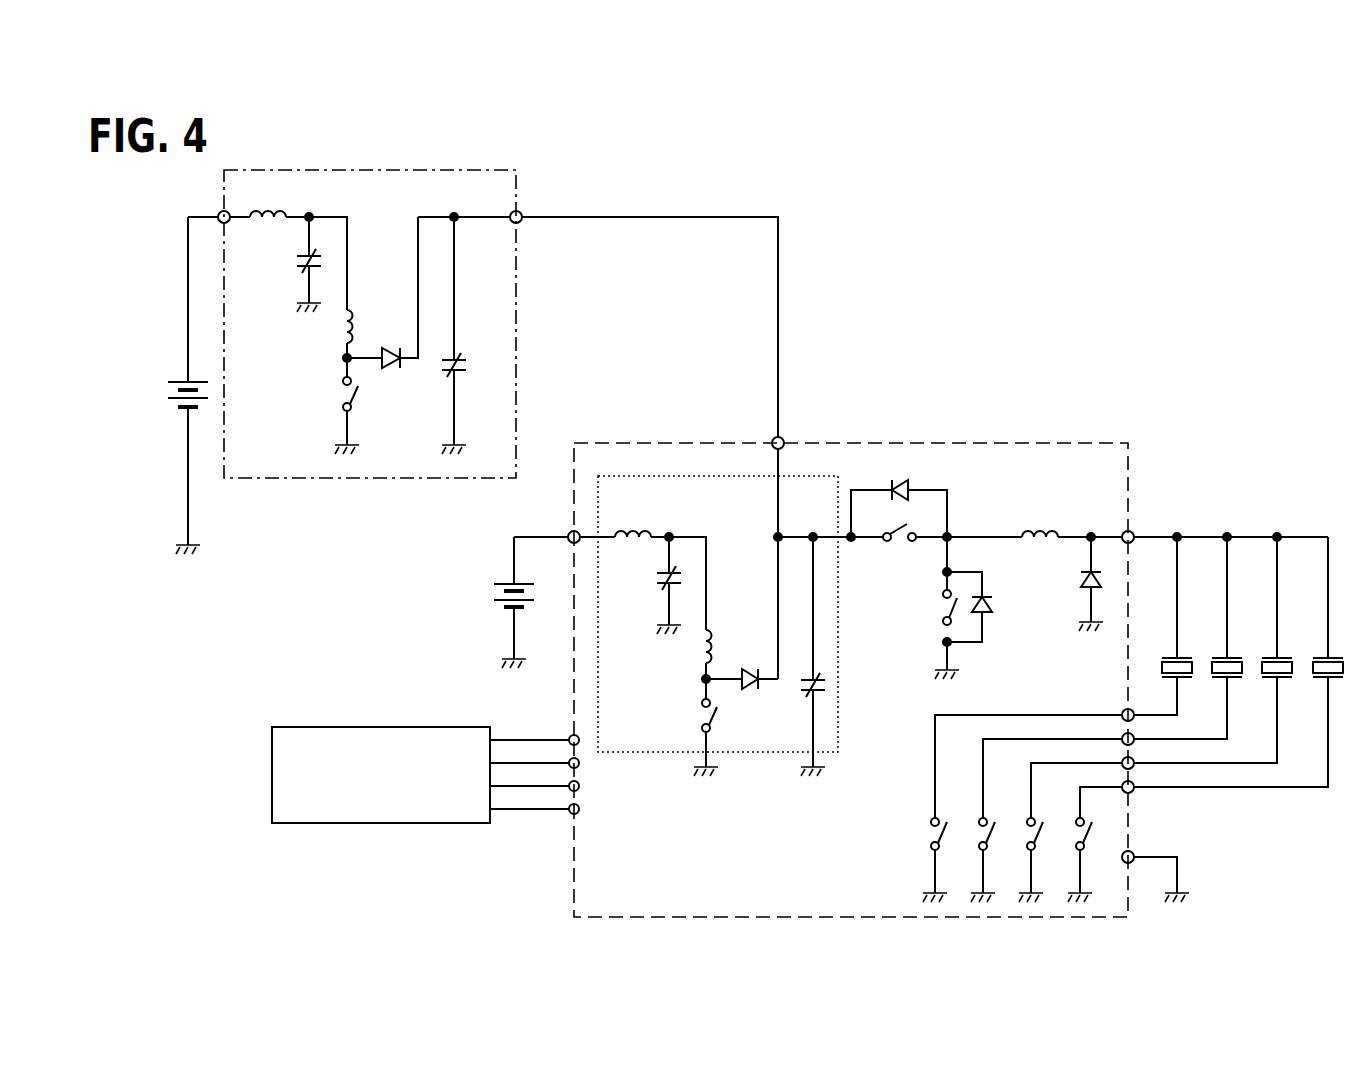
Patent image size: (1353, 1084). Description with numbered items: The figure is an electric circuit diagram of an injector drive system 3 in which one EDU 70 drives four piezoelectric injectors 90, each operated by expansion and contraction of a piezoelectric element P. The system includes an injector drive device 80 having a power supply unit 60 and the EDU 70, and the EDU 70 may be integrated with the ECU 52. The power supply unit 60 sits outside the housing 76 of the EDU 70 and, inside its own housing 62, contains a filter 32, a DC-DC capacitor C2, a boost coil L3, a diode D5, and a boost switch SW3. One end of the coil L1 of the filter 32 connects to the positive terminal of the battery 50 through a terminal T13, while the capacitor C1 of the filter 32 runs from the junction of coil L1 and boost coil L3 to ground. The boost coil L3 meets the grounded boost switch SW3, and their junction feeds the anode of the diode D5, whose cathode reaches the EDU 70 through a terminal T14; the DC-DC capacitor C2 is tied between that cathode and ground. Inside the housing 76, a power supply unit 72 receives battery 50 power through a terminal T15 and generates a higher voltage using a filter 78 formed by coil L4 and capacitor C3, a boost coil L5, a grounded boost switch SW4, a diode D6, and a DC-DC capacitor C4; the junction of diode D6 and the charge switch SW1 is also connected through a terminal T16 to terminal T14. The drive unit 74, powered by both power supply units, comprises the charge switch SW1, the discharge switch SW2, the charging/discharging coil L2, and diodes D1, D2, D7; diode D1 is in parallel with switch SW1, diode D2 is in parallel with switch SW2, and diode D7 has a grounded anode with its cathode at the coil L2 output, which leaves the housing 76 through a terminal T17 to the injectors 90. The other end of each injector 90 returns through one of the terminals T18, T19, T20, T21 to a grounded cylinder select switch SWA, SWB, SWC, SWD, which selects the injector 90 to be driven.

The injector drive system 3 is at (1218, 236).
The filter 32 is at (313, 205).
The battery 50 is at (184, 378).
The ECU 52 is at (272, 775).
The power supply unit 60 is at (541, 301).
The housing 62 is at (269, 479).
The EDU 70 is at (1051, 405).
The power supply unit 72 is at (685, 477).
The drive unit 74 is at (974, 502).
The housing 76 is at (912, 440).
The filter 78 is at (672, 529).
The injector drive device 80 is at (859, 214).
The injector 90 is at (1238, 660).
The piezoelectric element P is at (1168, 656).
The coil L1 is at (280, 213).
The charging/discharging coil L2 is at (1048, 530).
The boost coil L3 is at (342, 328).
The coil L4 is at (630, 532).
The boost coil L5 is at (701, 652).
The capacitor C1 is at (313, 251).
The DC-DC capacitor C2 is at (461, 357).
The capacitor C3 is at (664, 578).
The DC-DC capacitor C4 is at (808, 690).
The diode D1 is at (908, 484).
The diode D2 is at (996, 606).
The diode D5 is at (393, 346).
The diode D6 is at (760, 672).
The diode D7 is at (1084, 590).
The charge switch SW1 is at (900, 541).
The discharge switch SW2 is at (942, 609).
The boost switch SW3 is at (358, 402).
The boost switch SW4 is at (718, 714).
The cylinder select switch SWA is at (946, 840).
The cylinder select switch SWB is at (994, 840).
The cylinder select switch SWC is at (1042, 840).
The cylinder select switch SWD is at (1091, 840).
The terminal T13 is at (221, 212).
The terminal T14 is at (520, 212).
The terminal T15 is at (570, 530).
The terminal T16 is at (784, 437).
The terminal T17 is at (1133, 531).
The terminal T18 is at (1123, 710).
The terminal T19 is at (1122, 739).
The terminal T20 is at (1122, 763).
The terminal T21 is at (1122, 787).